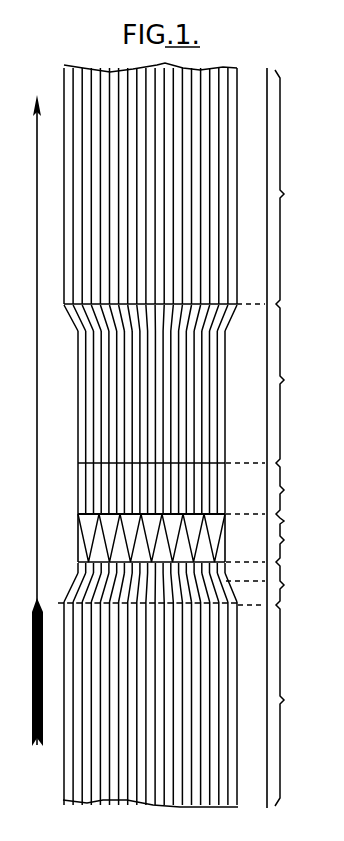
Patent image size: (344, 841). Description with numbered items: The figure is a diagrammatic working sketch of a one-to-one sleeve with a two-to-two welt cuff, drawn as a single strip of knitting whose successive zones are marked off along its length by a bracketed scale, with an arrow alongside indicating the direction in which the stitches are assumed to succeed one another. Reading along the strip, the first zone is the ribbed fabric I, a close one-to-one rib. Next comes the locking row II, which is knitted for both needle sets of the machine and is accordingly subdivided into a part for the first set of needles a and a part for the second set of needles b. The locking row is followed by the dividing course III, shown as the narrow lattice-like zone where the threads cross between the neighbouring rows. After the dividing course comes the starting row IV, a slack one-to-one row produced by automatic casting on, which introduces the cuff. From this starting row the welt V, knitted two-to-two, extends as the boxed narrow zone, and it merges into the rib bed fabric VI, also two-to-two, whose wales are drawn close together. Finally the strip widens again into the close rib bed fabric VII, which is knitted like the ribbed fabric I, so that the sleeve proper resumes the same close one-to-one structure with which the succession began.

The ribbed fabric 1:1 (close) I is at (180, 704).
The locking row II is at (179, 583).
The first set of needles a is at (167, 588).
The second set of needles b is at (179, 572).
The dividing course III is at (191, 538).
The starting row (automatic casting on) 1:1 (slack) IV is at (192, 518).
The welt 2:2 V is at (190, 488).
The rib bed fabric 2:2 VI is at (185, 384).
The rib bed fabric (close) VII is at (189, 183).